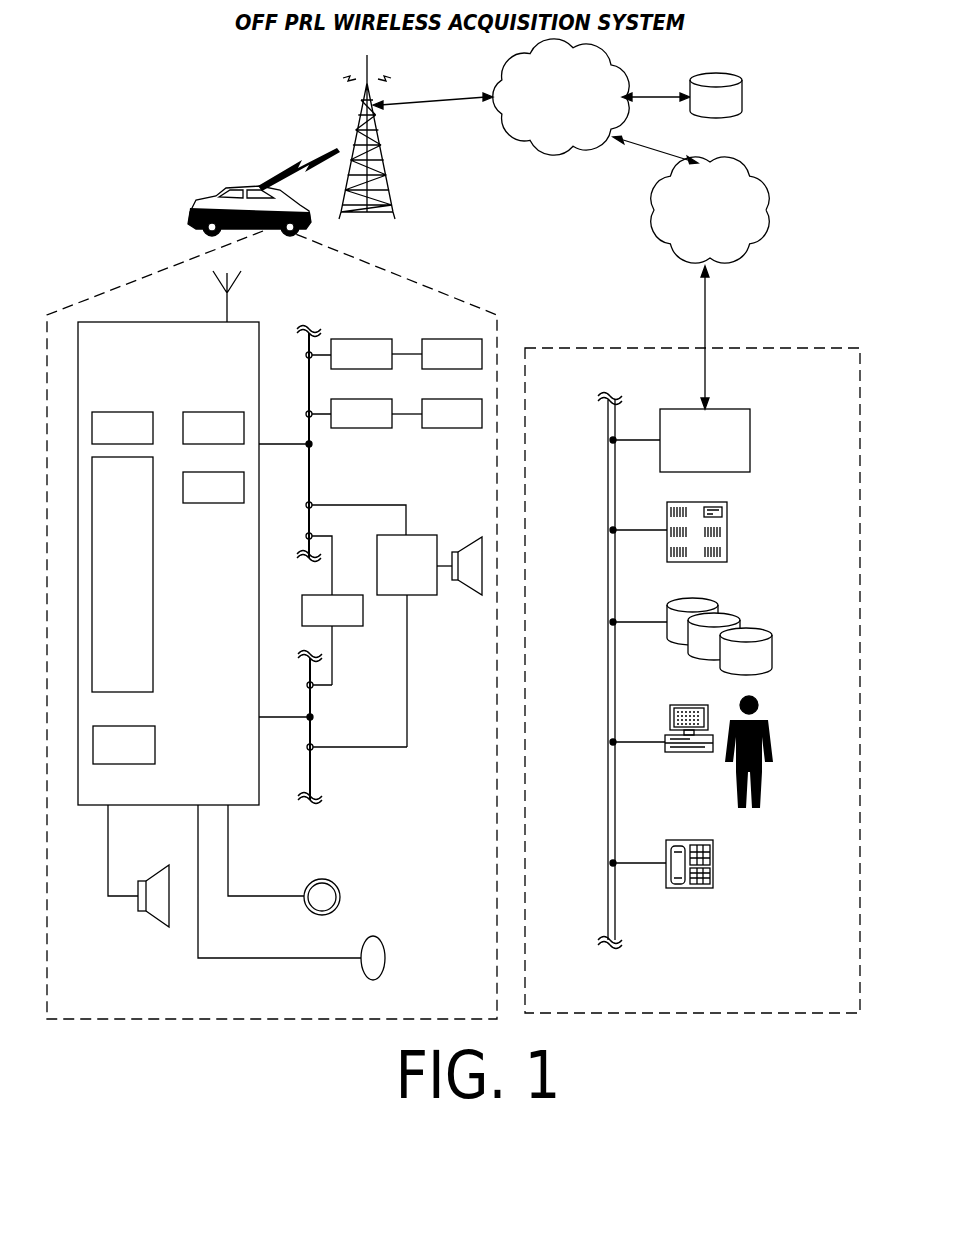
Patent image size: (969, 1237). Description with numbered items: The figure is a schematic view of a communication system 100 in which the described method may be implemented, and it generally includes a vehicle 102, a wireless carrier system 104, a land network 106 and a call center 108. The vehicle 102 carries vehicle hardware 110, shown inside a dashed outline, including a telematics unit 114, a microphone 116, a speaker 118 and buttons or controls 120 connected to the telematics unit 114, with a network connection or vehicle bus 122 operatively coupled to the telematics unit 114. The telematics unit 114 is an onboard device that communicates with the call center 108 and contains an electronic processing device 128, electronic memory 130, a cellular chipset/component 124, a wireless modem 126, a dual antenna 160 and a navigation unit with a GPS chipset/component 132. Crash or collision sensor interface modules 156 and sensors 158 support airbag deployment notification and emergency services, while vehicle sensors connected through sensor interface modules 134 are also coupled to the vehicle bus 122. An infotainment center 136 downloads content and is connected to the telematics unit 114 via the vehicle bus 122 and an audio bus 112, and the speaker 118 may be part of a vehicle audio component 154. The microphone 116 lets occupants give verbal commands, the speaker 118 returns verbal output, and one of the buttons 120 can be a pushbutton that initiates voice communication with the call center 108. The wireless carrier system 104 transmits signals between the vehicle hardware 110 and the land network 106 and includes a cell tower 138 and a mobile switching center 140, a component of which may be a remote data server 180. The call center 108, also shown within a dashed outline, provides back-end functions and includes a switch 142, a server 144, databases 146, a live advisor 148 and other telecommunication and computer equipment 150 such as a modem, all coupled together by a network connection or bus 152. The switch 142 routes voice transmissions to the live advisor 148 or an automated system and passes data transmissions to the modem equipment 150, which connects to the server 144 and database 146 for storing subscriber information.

The communication system 100 is at (155, 65).
The vehicle 102 is at (197, 200).
The wireless carrier system 104 is at (492, 163).
The land network 106 is at (710, 210).
The call center 108 is at (702, 1013).
The vehicle hardware 110 is at (212, 1019).
The audio bus 112 is at (287, 806).
The telematics unit 114 is at (258, 604).
The microphone 116 is at (377, 935).
The speaker 118 is at (150, 920).
The buttons or controls 120 is at (318, 880).
The vehicle bus 122 is at (310, 490).
The cellular chipset/component 124 is at (122, 428).
The wireless modem 126 is at (213, 428).
The electronic processing device 128 is at (122, 574).
The electronic memory 130 is at (124, 745).
The GPS chipset/component 132 is at (213, 487).
The sensor interface modules 134 is at (376, 413).
The infotainment center 136 is at (332, 640).
The cell tower 138 is at (367, 72).
The mobile switching center 140 is at (561, 97).
The switch 142 is at (705, 440).
The server 144 is at (728, 523).
The database 146 is at (772, 640).
The live advisor 148 is at (767, 717).
The telecommunication and computer equipment 150 is at (715, 860).
The network connection or bus 152 is at (607, 670).
The vehicle audio component 154 is at (429, 641).
The crash and/or collision sensor interface modules 156 is at (376, 354).
The sensors 158 is at (452, 354).
The dual antenna 160 is at (227, 314).
The remote data server 180 is at (742, 97).